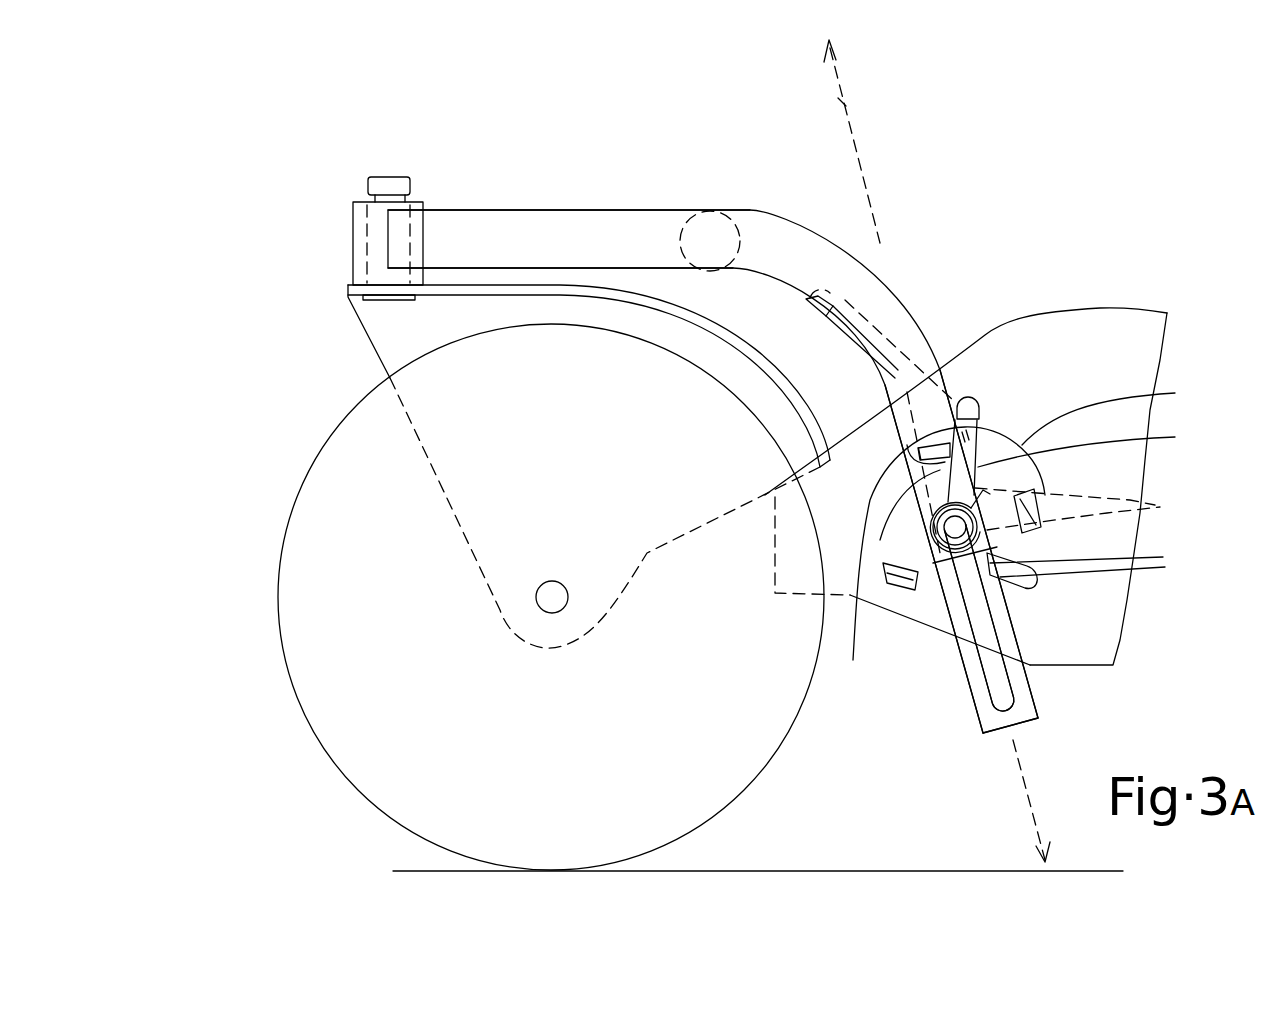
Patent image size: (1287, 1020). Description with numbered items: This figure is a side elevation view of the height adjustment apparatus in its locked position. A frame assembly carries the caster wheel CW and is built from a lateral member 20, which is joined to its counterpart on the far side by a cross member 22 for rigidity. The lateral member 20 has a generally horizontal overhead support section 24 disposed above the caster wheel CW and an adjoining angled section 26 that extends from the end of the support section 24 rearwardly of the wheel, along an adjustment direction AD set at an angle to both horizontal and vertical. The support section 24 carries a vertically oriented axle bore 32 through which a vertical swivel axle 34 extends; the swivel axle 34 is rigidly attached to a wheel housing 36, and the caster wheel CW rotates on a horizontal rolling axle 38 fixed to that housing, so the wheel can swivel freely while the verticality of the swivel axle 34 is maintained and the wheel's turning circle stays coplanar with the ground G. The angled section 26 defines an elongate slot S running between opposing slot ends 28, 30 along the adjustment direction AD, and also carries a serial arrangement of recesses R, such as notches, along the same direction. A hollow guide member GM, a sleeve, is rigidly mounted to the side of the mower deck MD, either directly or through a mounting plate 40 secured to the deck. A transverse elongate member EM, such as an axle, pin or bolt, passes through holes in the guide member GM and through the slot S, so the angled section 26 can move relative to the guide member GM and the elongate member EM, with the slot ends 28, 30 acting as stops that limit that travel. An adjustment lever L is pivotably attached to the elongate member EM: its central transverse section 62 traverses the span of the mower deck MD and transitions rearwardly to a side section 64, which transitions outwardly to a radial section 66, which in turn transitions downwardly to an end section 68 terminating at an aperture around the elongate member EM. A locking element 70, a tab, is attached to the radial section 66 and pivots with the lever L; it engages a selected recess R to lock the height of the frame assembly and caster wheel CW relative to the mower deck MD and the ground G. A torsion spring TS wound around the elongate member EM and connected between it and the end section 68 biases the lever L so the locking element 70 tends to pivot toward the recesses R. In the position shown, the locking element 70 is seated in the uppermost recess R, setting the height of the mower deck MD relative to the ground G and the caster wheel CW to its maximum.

The lateral member 20 is at (758, 211).
The cross member 22 is at (690, 214).
The overhead support section 24 is at (472, 210).
The angled section 26 is at (907, 297).
The slot end 28 is at (935, 450).
The slot end 30 is at (1037, 705).
The axle bore 32 is at (353, 223).
The swivel axle 34 is at (385, 178).
The wheel housing 36 is at (370, 345).
The rolling axle 38 is at (537, 599).
The mounting plate 40 is at (1118, 410).
The transverse section 62 is at (807, 303).
The side section 64 is at (833, 325).
The radial section 66 is at (964, 397).
The end section 68 is at (1096, 444).
The locking element 70 is at (974, 418).
The adjustment direction AD is at (846, 101).
The adjustment lever L is at (878, 312).
The mower deck MD is at (1113, 310).
The recesses R is at (1082, 538).
The elongate slot S is at (1013, 650).
The guide member GM is at (863, 548).
The transverse elongate member EM is at (933, 565).
The torsion spring TS is at (958, 566).
The caster wheel CW is at (343, 775).
The ground G is at (830, 871).